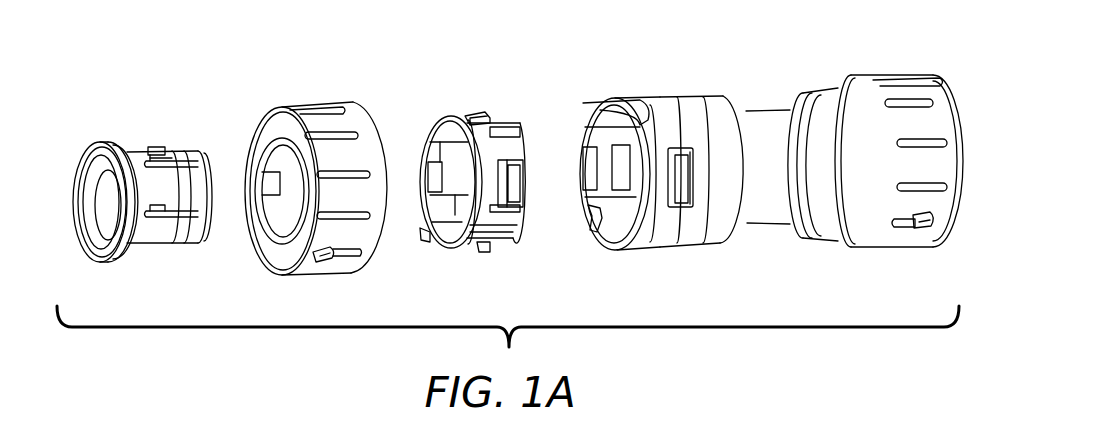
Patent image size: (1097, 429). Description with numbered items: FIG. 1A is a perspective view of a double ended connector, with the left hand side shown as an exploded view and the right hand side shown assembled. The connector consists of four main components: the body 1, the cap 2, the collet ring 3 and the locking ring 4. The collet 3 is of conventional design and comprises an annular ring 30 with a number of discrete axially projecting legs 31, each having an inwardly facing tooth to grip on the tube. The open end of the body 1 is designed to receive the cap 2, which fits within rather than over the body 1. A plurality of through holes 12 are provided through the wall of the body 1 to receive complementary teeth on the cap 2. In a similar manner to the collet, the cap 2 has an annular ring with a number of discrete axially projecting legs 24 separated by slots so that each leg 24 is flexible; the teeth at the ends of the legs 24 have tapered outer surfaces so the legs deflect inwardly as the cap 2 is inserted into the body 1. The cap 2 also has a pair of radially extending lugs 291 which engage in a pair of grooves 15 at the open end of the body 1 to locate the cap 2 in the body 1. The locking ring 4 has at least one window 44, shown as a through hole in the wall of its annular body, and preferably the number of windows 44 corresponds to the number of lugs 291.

The body 1 is at (715, 64).
The cap 2 is at (491, 82).
The collet ring 3 is at (164, 113).
The locking ring 4 is at (347, 84).
The through holes 12 is at (680, 190).
The grooves 15 is at (648, 101).
The legs 24 is at (516, 222).
The annular ring 30 is at (97, 252).
The legs 31 is at (156, 244).
The window 44 is at (330, 262).
The radially extending lugs 291 is at (490, 116).